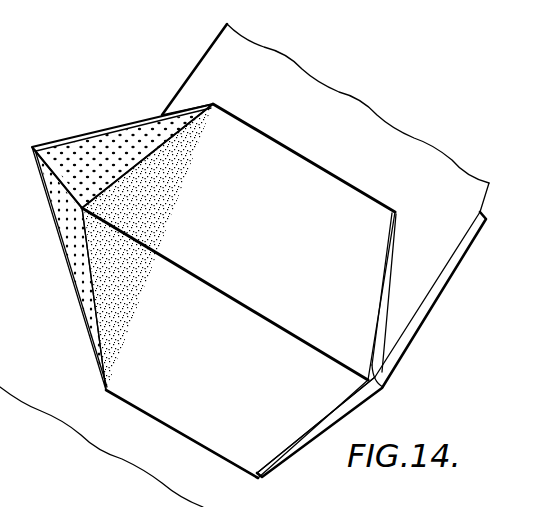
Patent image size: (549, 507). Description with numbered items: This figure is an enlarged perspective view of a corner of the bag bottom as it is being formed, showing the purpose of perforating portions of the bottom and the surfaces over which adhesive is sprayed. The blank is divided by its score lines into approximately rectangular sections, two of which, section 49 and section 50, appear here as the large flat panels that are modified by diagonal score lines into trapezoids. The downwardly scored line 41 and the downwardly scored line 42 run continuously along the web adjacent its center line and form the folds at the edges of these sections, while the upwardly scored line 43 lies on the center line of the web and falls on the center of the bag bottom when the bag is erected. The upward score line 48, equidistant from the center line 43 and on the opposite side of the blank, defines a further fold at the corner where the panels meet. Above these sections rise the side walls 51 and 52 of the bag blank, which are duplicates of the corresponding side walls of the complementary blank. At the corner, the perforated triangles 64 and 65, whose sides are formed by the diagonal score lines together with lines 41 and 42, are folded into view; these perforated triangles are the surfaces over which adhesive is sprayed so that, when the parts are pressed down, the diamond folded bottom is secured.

The downwardly scored line 41 is at (365, 193).
The downwardly scored line 42 is at (175, 428).
The upwardly scored line 43 is at (253, 308).
The upward score line 48 is at (378, 390).
The rectangular section 49 is at (225, 343).
The rectangular section 50 is at (239, 242).
The side wall 51 is at (325, 248).
The side wall 52 is at (433, 303).
The perforated triangle 64 is at (108, 148).
The perforated triangle 65 is at (67, 220).